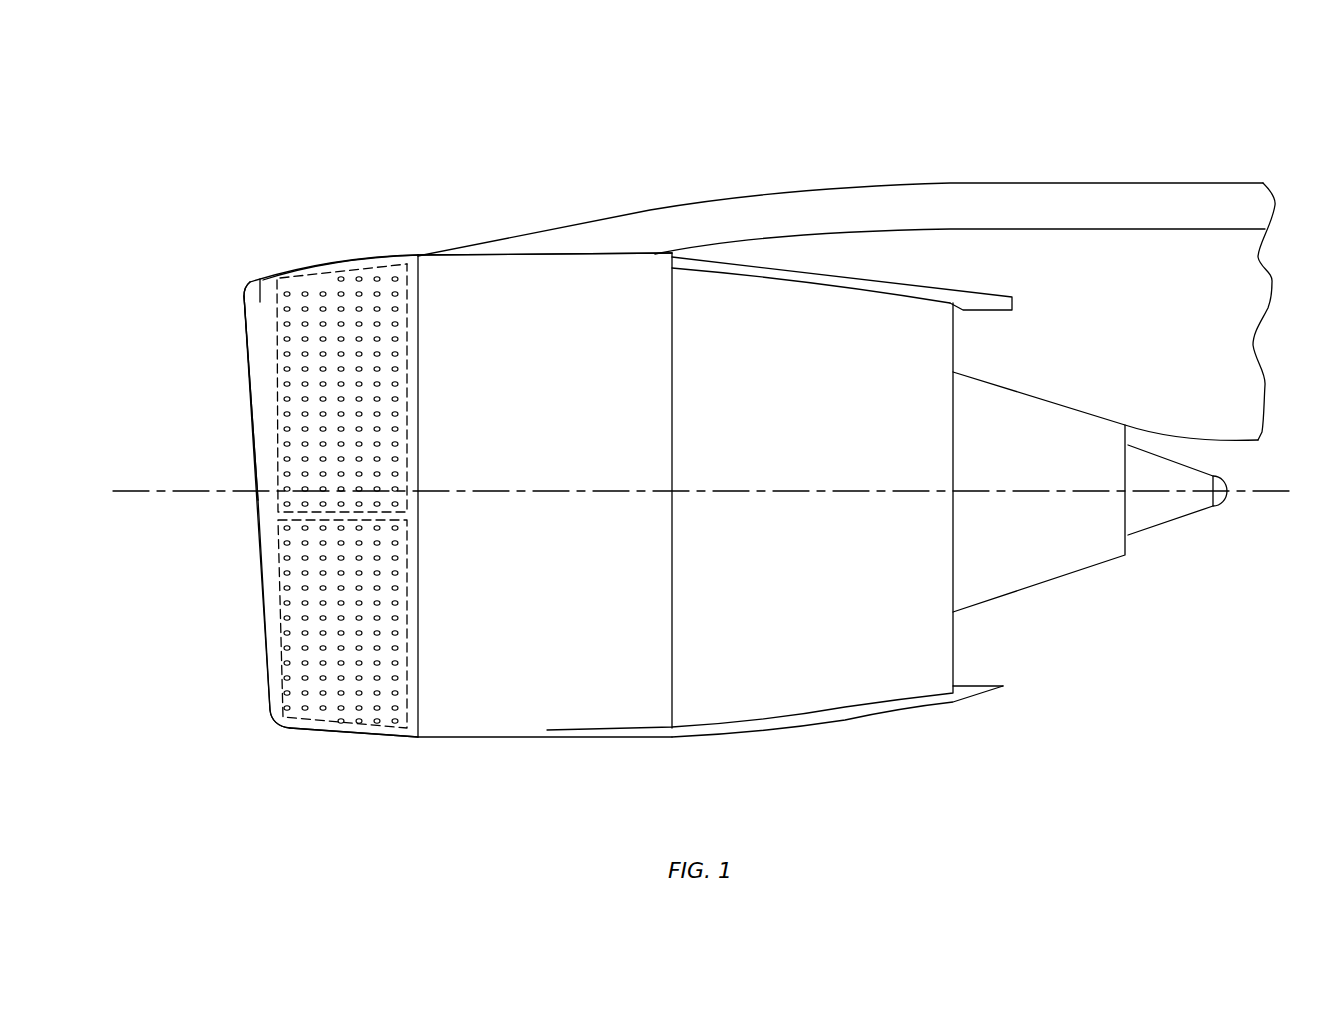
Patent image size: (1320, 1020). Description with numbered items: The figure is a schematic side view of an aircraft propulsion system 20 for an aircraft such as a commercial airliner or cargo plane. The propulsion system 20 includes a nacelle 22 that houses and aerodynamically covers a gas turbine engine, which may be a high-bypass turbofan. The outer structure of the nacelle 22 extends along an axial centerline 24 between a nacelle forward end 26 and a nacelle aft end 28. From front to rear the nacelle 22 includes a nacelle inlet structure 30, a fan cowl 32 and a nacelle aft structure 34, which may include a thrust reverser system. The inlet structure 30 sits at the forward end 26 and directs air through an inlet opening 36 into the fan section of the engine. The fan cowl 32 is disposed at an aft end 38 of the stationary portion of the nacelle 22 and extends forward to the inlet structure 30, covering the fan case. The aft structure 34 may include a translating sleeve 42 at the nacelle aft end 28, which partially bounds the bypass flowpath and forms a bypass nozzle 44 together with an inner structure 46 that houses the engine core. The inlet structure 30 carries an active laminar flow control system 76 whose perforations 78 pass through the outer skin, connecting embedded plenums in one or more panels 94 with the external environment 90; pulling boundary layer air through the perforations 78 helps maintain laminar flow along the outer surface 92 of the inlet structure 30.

The aircraft propulsion system 20 is at (233, 141).
The nacelle 22 is at (388, 244).
The axial centerline 24 is at (125, 492).
The nacelle forward end 26 is at (246, 308).
The nacelle aft end 28 is at (1015, 303).
The nacelle inlet structure 30 is at (308, 262).
The fan cowl 32 is at (520, 251).
The nacelle aft structure 34 is at (805, 258).
The inlet opening 36 is at (246, 362).
The aft end of stationary portion of the nacelle 38 is at (672, 690).
The translating sleeve 42 is at (845, 707).
The bypass nozzle 44 is at (957, 651).
The inner structure 46 is at (1012, 600).
The active laminar flow control system 76 is at (345, 732).
The perforations 78 is at (305, 412).
The external outside environment 90 is at (460, 106).
The outer surface of the inlet structure 92 is at (258, 280).
The panel 94 is at (276, 464).